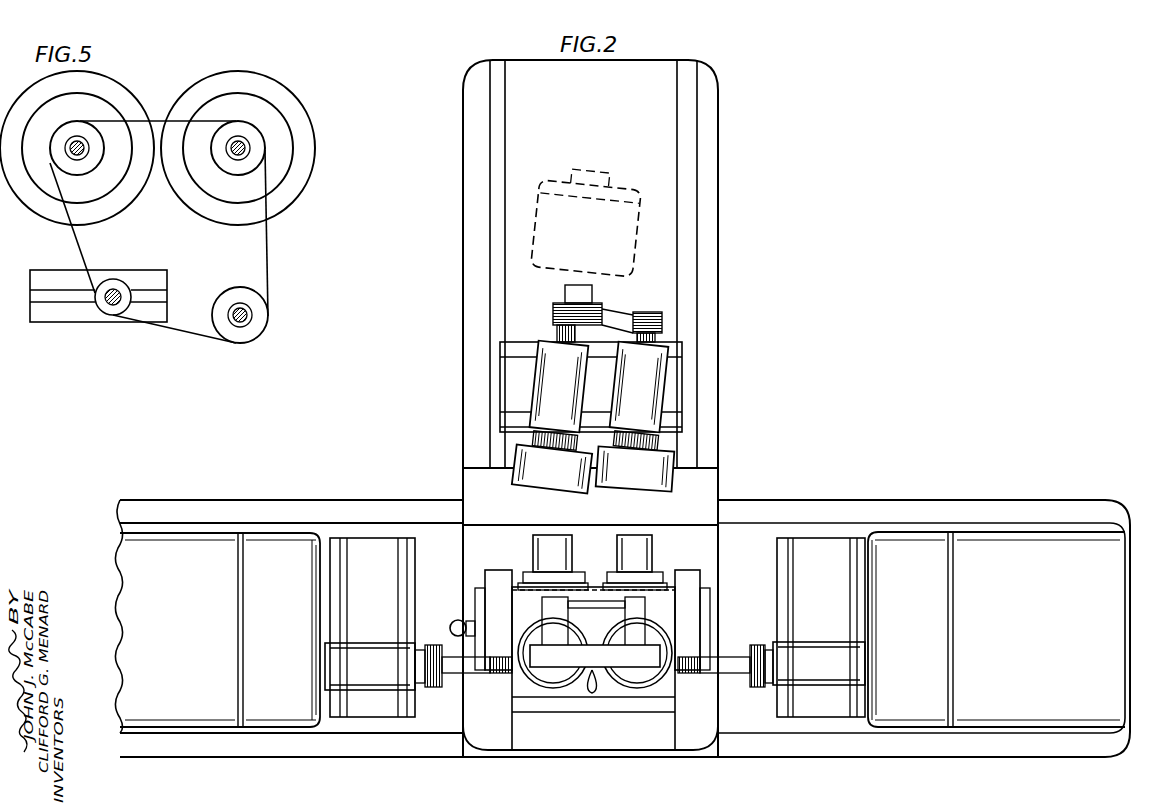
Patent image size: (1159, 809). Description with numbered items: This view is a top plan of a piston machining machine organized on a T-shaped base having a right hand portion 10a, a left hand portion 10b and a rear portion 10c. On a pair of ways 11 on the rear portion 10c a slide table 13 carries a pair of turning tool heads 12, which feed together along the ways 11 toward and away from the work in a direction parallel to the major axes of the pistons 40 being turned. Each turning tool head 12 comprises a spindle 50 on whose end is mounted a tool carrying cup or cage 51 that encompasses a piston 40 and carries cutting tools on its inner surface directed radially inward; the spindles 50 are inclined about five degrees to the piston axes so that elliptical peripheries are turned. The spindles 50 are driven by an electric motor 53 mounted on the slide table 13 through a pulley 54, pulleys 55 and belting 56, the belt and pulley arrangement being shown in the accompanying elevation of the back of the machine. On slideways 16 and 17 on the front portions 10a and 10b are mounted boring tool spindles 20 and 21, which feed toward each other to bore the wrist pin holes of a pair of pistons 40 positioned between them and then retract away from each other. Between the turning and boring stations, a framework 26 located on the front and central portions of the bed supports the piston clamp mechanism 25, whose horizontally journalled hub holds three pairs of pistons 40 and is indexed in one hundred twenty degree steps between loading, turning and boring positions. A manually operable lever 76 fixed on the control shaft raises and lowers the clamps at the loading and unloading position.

In FIG. 2, the right hand portion of base 10a is at (945, 488).
In FIG. 2, the left hand portion of base 10b is at (353, 504).
In FIG. 2, the rear portion of base 10c is at (718, 251).
In FIG. 2, the ways 11 is at (482, 176).
In FIG. 2, the turning tool heads 12 is at (617, 493).
In FIG. 2, the slide table 13 is at (672, 399).
In FIG. 2, the slideway 16 is at (812, 531).
In FIG. 2, the slideway 17 is at (223, 528).
In FIG. 2, the boring tool spindle 20 is at (798, 658).
In FIG. 2, the boring tool spindle 21 is at (384, 672).
In FIG. 2, the piston clamp mechanism 25 is at (590, 668).
In FIG. 2, the framework 26 is at (666, 600).
In FIG. 2, the pistons 40 is at (628, 546).
In FIG. 5, the spindles 50 is at (85, 148).
In FIG. 2, the spindles 50 is at (556, 334).
In FIG. 2, the tool carrying cups or cages 51 is at (593, 417).
In FIG. 2, the electric motor 53 is at (625, 186).
In FIG. 5, the pulley 54 is at (262, 309).
In FIG. 2, the pulley 54 is at (596, 302).
In FIG. 5, the pulleys 55 is at (85, 168).
In FIG. 2, the pulleys 55 is at (556, 303).
In FIG. 5, the belting 56 is at (272, 250).
In FIG. 2, the belting 56 is at (614, 318).
In FIG. 2, the manually operable lever 76 is at (458, 620).